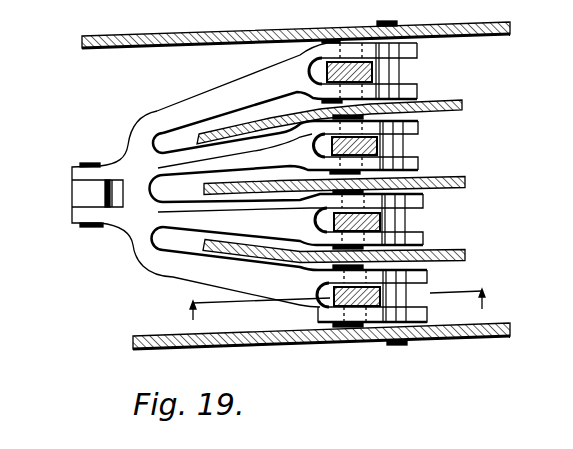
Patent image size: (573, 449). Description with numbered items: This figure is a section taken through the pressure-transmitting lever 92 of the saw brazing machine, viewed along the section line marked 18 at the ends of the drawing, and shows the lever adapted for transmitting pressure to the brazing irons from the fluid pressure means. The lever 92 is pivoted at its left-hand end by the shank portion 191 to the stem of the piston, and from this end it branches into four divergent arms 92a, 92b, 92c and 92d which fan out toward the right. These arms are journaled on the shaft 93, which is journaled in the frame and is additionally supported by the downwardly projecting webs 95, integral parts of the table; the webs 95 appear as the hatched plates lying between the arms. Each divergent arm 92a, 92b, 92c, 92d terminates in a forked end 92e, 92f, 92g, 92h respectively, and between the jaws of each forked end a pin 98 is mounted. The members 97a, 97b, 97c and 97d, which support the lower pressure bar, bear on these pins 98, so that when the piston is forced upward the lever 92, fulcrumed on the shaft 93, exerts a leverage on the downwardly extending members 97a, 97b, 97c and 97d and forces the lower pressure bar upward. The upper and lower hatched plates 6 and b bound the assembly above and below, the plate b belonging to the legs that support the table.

The upper guard plate 6 is at (252, 35).
The legs b is at (278, 349).
The shaft 93 is at (386, 21).
The shank of fork 191 is at (85, 193).
The lever 92 is at (130, 221).
The divergent arm 92a is at (217, 275).
The divergent arm 92b is at (290, 239).
The divergent arm 92c is at (287, 168).
The divergent arm 92d is at (208, 100).
The forked end 92e is at (427, 313).
The forked end 92f is at (423, 208).
The forked end 92g is at (418, 135).
The forked end 92h is at (418, 50).
The pressure bar supporting member 97a is at (340, 300).
The pressure bar supporting member 97b is at (337, 221).
The pressure bar supporting member 97c is at (338, 146).
The pressure bar supporting member 97d is at (327, 72).
The webs 95 is at (267, 114).
The pins 98 is at (335, 50).
The section line of Fig. 18 is at (339, 310).